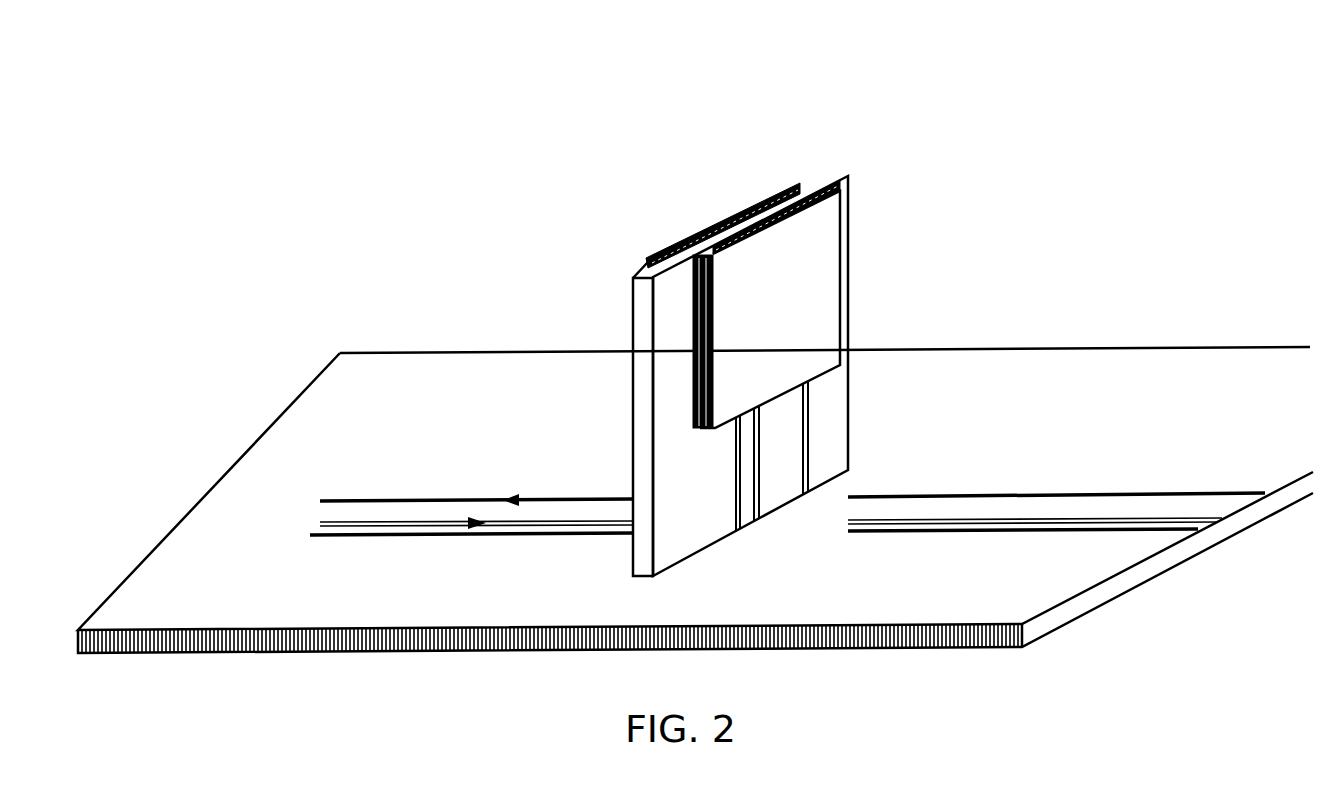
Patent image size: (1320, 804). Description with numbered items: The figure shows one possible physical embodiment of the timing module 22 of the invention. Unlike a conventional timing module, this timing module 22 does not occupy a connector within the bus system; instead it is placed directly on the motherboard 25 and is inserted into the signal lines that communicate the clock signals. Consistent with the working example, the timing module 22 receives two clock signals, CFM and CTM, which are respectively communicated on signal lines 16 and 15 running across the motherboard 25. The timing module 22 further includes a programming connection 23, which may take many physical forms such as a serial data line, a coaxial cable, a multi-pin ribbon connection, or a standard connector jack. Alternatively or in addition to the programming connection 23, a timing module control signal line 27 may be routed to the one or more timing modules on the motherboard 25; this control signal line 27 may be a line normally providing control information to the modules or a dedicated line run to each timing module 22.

The signal line 15 is at (435, 498).
The signal line 16 is at (417, 528).
The timing module control signal line 27 is at (353, 538).
The timing module 22 is at (849, 228).
The programming connection 23 is at (833, 178).
The motherboard 25 is at (1013, 609).